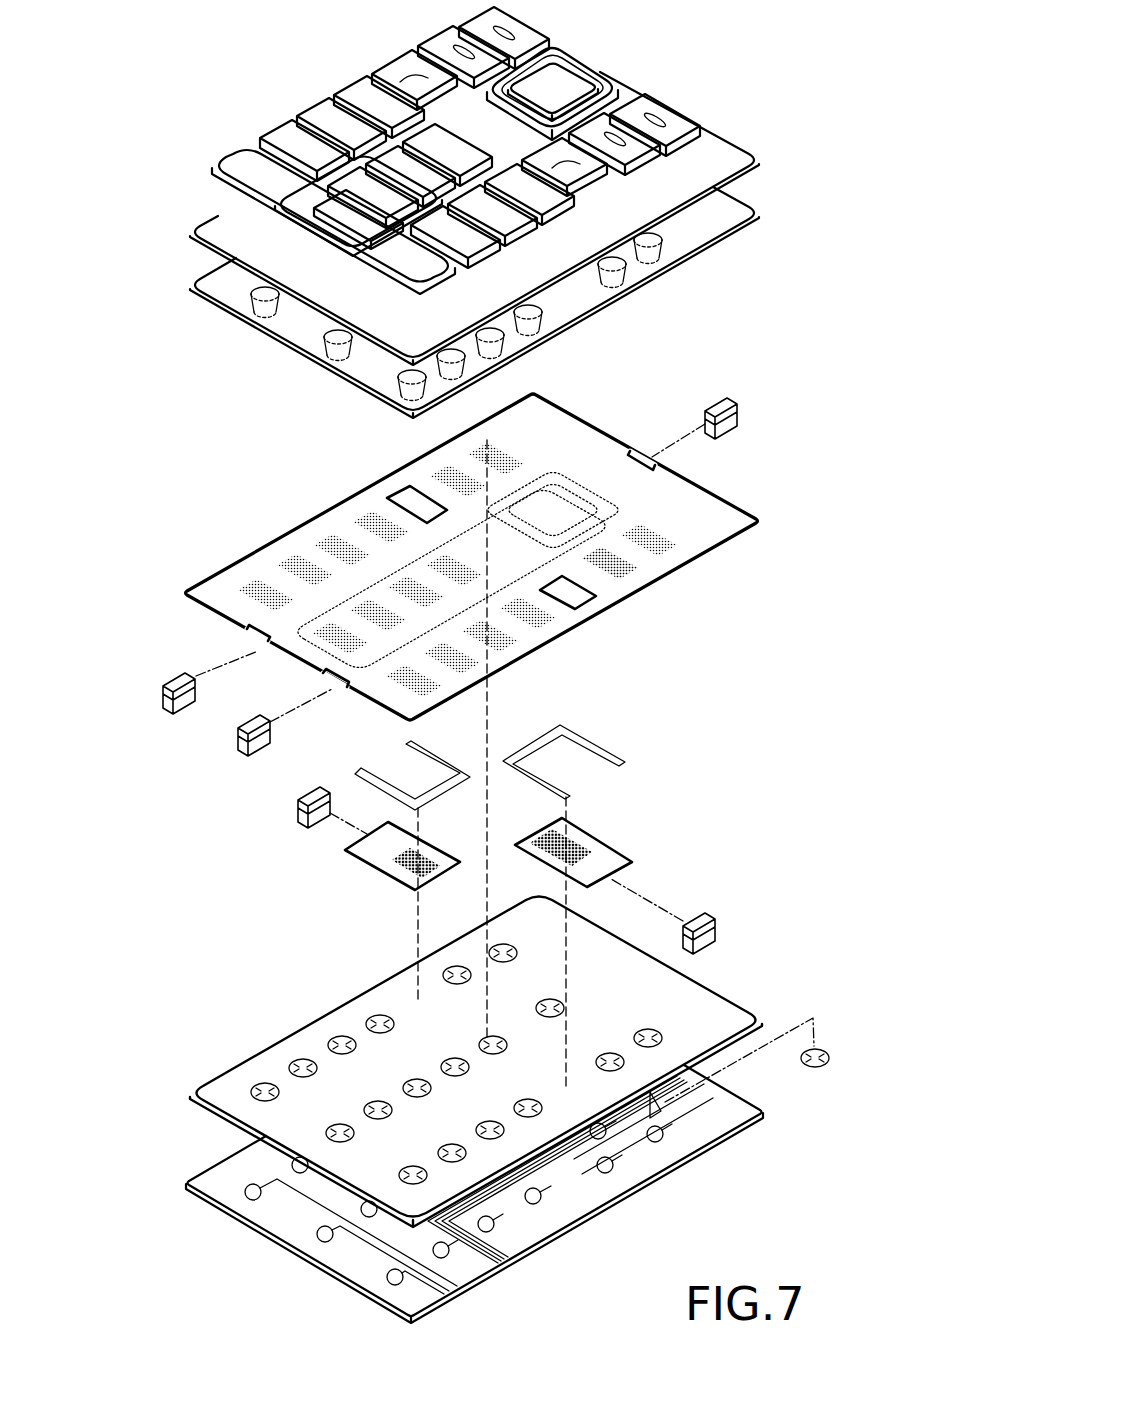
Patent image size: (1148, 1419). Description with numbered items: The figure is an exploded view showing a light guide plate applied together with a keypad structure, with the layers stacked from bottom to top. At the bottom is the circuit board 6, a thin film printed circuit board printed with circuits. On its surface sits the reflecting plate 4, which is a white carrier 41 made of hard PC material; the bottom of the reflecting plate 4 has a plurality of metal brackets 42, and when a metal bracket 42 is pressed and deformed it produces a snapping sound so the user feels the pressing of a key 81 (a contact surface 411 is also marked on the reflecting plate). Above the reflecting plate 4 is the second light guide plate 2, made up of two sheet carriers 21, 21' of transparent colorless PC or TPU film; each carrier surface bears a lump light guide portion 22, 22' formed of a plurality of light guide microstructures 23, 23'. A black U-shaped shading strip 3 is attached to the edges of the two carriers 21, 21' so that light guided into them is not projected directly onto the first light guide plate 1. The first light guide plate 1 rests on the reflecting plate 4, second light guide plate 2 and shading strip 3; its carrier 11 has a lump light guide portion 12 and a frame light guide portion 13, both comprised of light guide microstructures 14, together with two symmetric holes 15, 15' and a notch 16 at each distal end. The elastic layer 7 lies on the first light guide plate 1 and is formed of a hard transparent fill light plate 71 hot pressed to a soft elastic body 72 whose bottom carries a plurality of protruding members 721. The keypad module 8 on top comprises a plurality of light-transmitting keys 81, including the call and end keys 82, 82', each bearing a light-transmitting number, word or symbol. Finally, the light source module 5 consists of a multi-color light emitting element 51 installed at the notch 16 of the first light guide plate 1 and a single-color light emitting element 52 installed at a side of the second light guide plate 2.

The first light guide plate 1 is at (755, 508).
The carrier 11 is at (695, 500).
The lump light guide portion 12 is at (642, 572).
The frame light guide portion 13 is at (560, 472).
The light guide microstructures 14 is at (624, 574).
The hole 15 is at (377, 486).
The hole 15' is at (598, 626).
The notch 16 is at (647, 455).
The second light guide plate 2 is at (633, 876).
The sheet carrier 21 is at (357, 874).
The sheet carrier 21' is at (615, 852).
The lump light guide portion 22 is at (382, 905).
The lump light guide portion 22' is at (596, 822).
The light guide microstructures 23 is at (437, 842).
The light guide microstructures 23' is at (634, 815).
The shading strip 3 is at (446, 767).
The reflecting plate 4 is at (820, 1003).
The white carrier 41 is at (732, 997).
The contact surface 411 is at (604, 1005).
The metal bracket 42 is at (832, 1061).
The light source module 5 is at (161, 671).
The light emitting element of multi-color light 51 is at (733, 428).
The light emitting element of single-color light 52 is at (300, 812).
The circuit board 6 is at (726, 1118).
The elastic layer 7 is at (768, 160).
The fill light plate 71 is at (725, 150).
The elastic body 72 is at (724, 212).
The protruding member 721 is at (664, 238).
The keypad module 8 is at (606, 63).
The key 81 is at (316, 118).
The call key 82 is at (379, 56).
The end key 82' is at (630, 121).